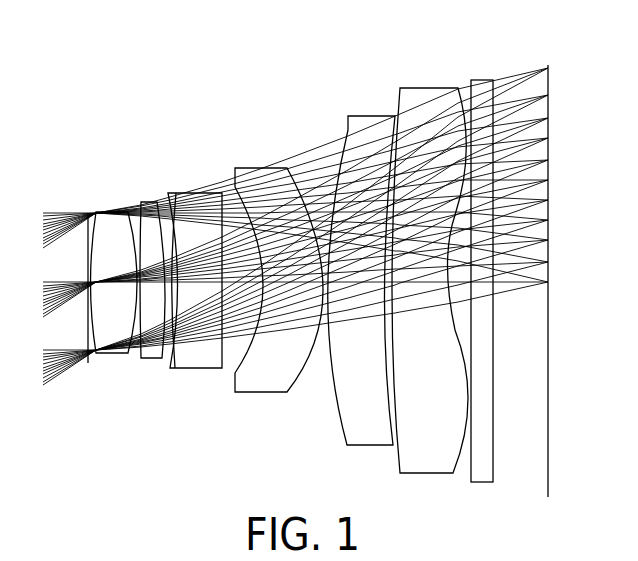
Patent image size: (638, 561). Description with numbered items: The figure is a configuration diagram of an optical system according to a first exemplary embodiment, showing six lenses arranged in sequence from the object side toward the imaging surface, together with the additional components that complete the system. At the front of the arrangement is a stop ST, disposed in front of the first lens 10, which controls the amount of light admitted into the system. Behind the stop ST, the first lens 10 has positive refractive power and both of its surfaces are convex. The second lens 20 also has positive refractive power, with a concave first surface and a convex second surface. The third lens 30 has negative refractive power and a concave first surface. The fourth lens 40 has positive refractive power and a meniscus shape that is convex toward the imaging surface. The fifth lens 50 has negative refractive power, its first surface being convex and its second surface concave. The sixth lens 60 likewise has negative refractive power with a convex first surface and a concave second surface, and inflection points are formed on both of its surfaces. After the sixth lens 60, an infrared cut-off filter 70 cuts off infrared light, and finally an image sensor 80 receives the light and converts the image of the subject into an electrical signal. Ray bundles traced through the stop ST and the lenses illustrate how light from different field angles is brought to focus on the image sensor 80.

The stop ST is at (87, 210).
The first lens 10 is at (113, 220).
The second lens 20 is at (153, 220).
The third lens 30 is at (185, 193).
The fourth lens 40 is at (255, 173).
The fifth lens 50 is at (362, 118).
The sixth lens 60 is at (425, 92).
The infrared cut-off filter 70 is at (479, 80).
The image sensor 80 is at (550, 65).